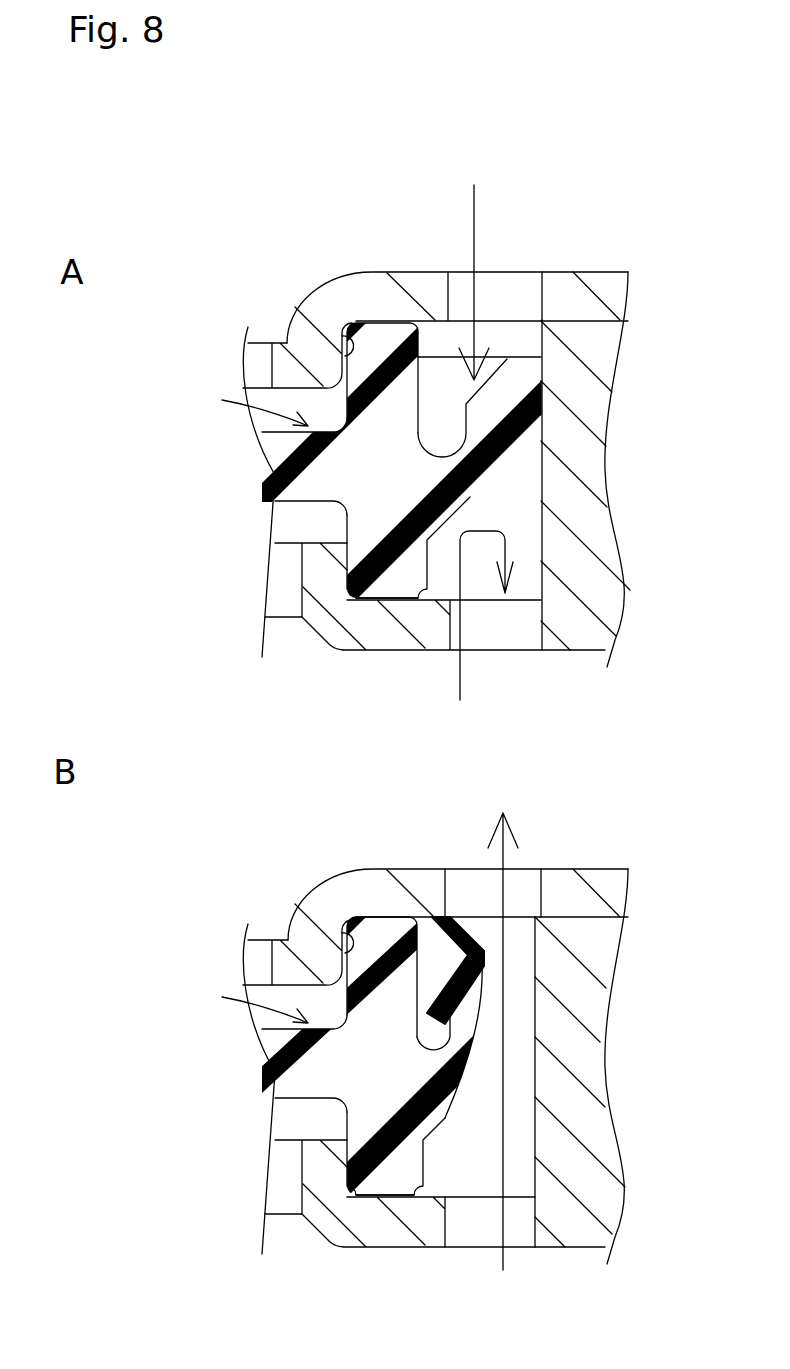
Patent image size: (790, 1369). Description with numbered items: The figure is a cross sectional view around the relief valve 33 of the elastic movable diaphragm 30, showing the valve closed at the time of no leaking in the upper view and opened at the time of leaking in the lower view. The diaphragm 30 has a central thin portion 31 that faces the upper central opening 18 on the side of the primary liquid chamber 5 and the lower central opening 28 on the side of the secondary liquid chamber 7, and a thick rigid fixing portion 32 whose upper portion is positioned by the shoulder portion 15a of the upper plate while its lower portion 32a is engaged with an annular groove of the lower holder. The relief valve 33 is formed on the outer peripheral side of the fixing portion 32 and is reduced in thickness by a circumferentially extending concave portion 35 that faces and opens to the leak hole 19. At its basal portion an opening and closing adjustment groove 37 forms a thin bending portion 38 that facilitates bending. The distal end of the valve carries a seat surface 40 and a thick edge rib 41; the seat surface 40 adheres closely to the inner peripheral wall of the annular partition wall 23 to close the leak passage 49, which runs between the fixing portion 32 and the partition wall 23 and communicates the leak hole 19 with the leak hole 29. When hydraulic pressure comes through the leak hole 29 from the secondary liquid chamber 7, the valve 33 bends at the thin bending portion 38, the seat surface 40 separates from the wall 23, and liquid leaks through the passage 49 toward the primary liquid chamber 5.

The primary liquid chamber 5 is at (466, 179).
The secondary liquid chamber 7 is at (454, 731).
The shoulder portion 15a is at (347, 330).
The upper central opening 18 is at (257, 360).
The leak hole 19 is at (530, 288).
The annular partition wall 23 is at (605, 352).
The lower central opening 28 is at (275, 578).
The leak hole 29 is at (497, 640).
The elastic movable diaphragm 30 is at (241, 704).
The central thin portion 31 is at (283, 450).
The fixing portion 32 is at (373, 338).
The lower portion 32a is at (400, 590).
The relief valve 33 is at (497, 393).
The concave portion 35 is at (430, 375).
The opening and closing adjustment groove 37 is at (455, 402).
The thin bending portion 38 is at (462, 454).
The seat surface 40 is at (541, 369).
The edge rib 41 is at (528, 357).
The leak passage 49 is at (518, 522).